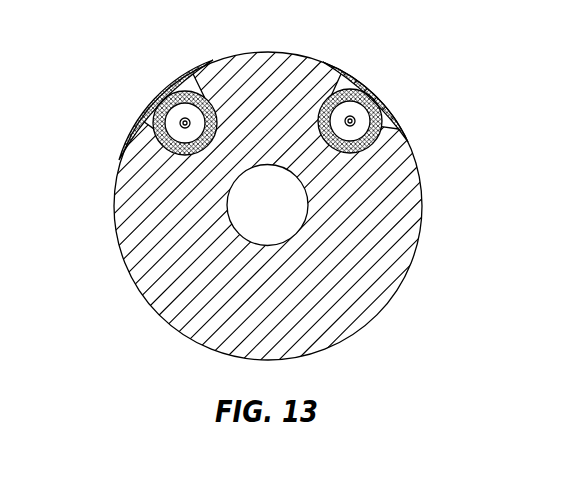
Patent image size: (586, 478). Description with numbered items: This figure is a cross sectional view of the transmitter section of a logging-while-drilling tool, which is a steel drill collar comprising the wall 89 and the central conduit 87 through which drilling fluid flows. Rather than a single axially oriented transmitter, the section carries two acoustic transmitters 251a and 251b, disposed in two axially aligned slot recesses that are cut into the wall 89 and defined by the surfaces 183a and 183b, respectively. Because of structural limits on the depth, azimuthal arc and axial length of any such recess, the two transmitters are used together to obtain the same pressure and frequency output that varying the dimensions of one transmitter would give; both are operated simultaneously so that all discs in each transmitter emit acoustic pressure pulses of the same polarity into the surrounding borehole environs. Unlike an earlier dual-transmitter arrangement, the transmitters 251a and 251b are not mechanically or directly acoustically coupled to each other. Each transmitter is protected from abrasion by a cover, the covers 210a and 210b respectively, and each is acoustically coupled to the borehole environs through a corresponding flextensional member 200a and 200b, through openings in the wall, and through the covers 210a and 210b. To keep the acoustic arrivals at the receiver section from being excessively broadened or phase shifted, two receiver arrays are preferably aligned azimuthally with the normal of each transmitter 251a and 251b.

The slot recess surface 183a is at (176, 80).
The slot recess surface 183b is at (392, 110).
The cover 210a is at (158, 101).
The cover 210b is at (375, 95).
The flextensional member 200a is at (162, 149).
The flextensional member 200b is at (372, 148).
The transmitter 251a is at (176, 163).
The transmitter 251b is at (362, 165).
The conduit 87 is at (294, 207).
The wall 89 is at (353, 295).